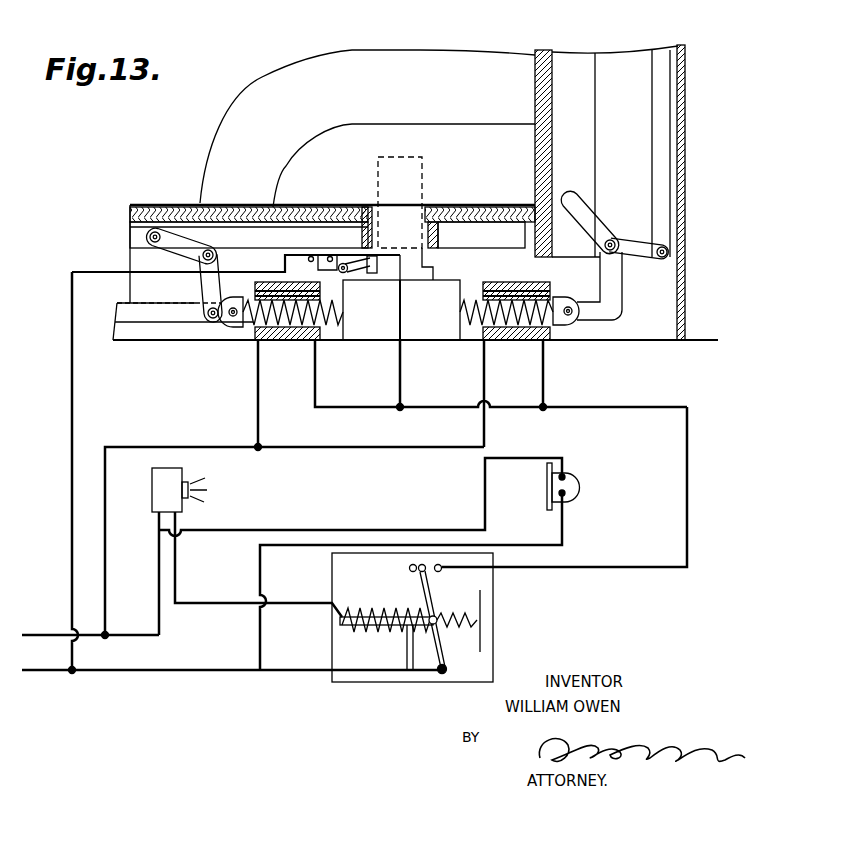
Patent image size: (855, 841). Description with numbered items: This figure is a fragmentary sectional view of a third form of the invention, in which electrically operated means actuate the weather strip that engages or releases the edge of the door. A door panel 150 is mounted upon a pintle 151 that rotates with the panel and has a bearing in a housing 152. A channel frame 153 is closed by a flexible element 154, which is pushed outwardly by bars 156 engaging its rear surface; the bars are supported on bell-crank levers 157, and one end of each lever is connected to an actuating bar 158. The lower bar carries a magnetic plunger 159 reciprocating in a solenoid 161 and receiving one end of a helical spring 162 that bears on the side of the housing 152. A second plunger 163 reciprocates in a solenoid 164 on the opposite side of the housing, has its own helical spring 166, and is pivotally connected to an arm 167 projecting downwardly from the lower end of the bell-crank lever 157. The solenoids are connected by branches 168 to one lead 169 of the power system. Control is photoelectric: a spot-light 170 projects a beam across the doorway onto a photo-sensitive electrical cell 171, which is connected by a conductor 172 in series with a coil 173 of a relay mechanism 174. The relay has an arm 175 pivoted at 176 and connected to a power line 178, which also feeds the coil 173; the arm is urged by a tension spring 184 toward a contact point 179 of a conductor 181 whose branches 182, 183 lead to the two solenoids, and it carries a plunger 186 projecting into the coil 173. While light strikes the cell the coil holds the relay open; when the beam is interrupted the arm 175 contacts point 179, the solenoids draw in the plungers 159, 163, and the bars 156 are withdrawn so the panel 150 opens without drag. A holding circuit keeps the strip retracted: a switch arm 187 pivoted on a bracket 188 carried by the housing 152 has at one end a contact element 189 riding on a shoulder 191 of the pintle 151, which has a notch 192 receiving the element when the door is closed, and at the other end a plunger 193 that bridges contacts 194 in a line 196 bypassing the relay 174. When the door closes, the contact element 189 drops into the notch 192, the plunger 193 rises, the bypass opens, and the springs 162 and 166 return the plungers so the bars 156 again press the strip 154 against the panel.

The door panel 150 is at (218, 126).
The pintle 151 is at (442, 236).
The housing 152 is at (363, 341).
The channel frame 153 is at (686, 88).
The flexible element 154 is at (149, 205).
The bars 156 is at (246, 224).
The bell-crank levers 157 is at (183, 257).
The actuating bar 158 is at (136, 312).
The magnetic plunger 159 is at (242, 322).
The solenoid 161 is at (257, 348).
The helical spring 162 is at (334, 308).
The second plunger 163 is at (555, 323).
The solenoid 164 is at (522, 330).
The helical spring 166 is at (478, 322).
The arm 167 is at (615, 285).
The branches 168 is at (262, 429).
The lead 169 is at (329, 450).
The spot-light 170 is at (582, 484).
The photo-sensitive electrical cell 171 is at (163, 479).
The conductor 172 is at (231, 604).
The coil 173 is at (377, 626).
The relay mechanism 174 is at (342, 647).
The arm 175 is at (420, 588).
The pivot 176 is at (447, 667).
The power line 178 is at (170, 672).
The contact point 179 is at (441, 571).
The conductor 181 is at (620, 568).
The branch 182 is at (316, 394).
The branch 183 is at (546, 392).
The tension spring 184 is at (481, 621).
The plunger 186 is at (413, 670).
The switch arm 187 is at (345, 271).
The bracket 188 is at (345, 283).
The contact element 189 is at (356, 249).
The shoulder 191 is at (434, 268).
The notch 192 is at (377, 268).
The plunger 193 is at (313, 257).
The contacts 194 is at (311, 256).
The line 196 is at (74, 432).